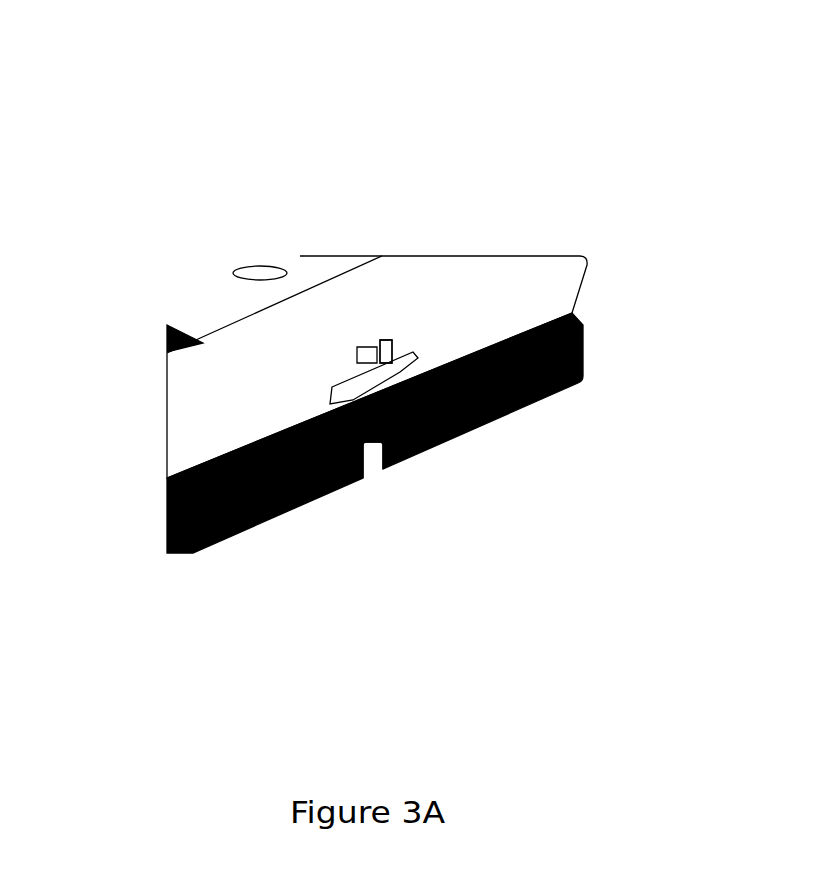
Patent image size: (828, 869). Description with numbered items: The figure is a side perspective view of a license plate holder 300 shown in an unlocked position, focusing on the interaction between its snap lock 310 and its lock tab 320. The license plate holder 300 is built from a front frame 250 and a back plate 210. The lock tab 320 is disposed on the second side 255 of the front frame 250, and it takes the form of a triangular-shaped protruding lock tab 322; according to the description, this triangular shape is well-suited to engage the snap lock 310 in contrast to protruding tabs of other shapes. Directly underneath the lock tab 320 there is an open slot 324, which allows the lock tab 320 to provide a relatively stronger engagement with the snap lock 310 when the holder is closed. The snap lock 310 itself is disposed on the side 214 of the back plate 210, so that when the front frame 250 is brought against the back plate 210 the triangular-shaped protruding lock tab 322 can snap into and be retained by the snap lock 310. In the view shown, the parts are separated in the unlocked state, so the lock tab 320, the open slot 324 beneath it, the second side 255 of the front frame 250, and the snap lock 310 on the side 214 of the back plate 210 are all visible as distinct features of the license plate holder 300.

The license plate holder 300 is at (190, 168).
The front frame 250 is at (433, 275).
The second side 255 is at (280, 382).
The lock tab 320 is at (388, 338).
The triangular-shaped protruding lock tab 322 is at (386, 351).
The open slot 324 is at (397, 367).
The snap lock 310 is at (460, 437).
The side 214 is at (228, 538).
The back plate 210 is at (128, 600).